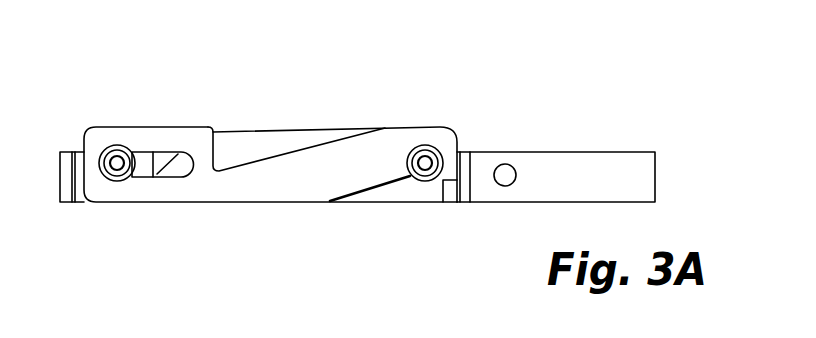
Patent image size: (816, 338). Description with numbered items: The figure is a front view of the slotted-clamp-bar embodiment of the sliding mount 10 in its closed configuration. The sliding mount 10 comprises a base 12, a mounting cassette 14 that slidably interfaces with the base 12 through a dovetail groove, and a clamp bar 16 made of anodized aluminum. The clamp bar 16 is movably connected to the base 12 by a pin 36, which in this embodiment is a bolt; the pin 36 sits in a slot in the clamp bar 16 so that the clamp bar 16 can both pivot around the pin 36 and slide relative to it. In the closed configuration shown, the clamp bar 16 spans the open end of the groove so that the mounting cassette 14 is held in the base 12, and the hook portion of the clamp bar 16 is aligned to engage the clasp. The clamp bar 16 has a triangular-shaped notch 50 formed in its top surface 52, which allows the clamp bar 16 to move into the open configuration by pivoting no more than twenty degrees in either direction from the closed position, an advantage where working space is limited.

The sliding mount 10 is at (682, 68).
The base 12 is at (592, 151).
The mounting cassette 14 is at (333, 132).
The clamp bar 16 is at (367, 192).
The pin 36 is at (120, 181).
The triangular-shaped notch 50 is at (268, 156).
The top surface 52 is at (155, 118).